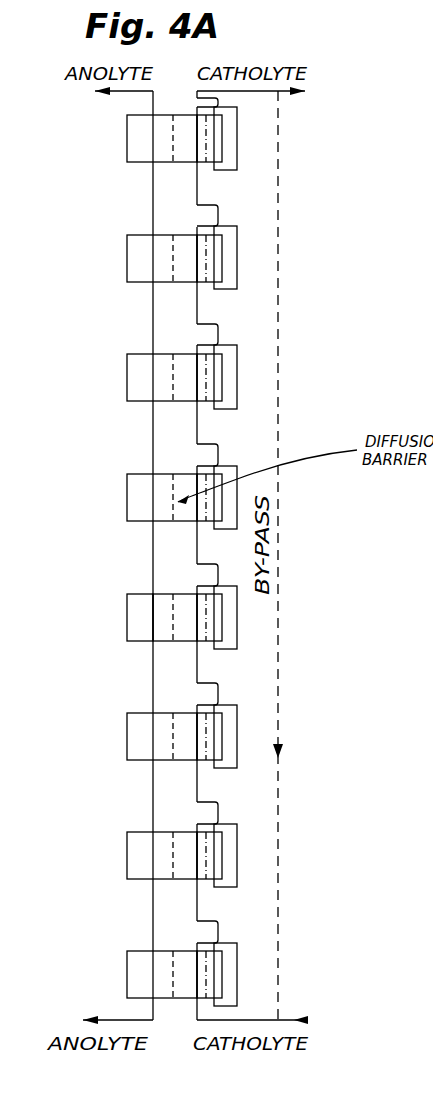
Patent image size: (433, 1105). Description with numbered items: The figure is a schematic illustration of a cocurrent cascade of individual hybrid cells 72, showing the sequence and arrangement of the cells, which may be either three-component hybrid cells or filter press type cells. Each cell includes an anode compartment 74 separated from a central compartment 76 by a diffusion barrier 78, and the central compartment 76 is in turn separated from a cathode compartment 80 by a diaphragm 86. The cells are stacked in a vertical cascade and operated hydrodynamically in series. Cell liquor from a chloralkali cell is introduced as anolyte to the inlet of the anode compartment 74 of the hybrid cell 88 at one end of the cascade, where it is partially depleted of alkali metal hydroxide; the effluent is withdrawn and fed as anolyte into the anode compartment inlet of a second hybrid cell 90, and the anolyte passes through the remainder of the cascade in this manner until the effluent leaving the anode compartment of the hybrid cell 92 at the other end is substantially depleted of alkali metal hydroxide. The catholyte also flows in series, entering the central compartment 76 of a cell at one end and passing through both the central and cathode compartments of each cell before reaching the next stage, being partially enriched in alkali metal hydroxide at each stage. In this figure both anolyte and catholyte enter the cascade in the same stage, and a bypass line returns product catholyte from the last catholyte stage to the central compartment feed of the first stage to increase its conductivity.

The hybrid cells 72 is at (118, 583).
The anode compartment 74 is at (133, 627).
The central compartment 76 is at (185, 635).
The diffusion barrier 78 is at (168, 612).
The cathode compartment 80 is at (217, 620).
The diaphragm 86 is at (205, 643).
The hybrid cell at one end of the cascade 88 is at (132, 973).
The second hybrid cell 90 is at (132, 855).
The hybrid cell at the other end of the cascade 92 is at (125, 133).